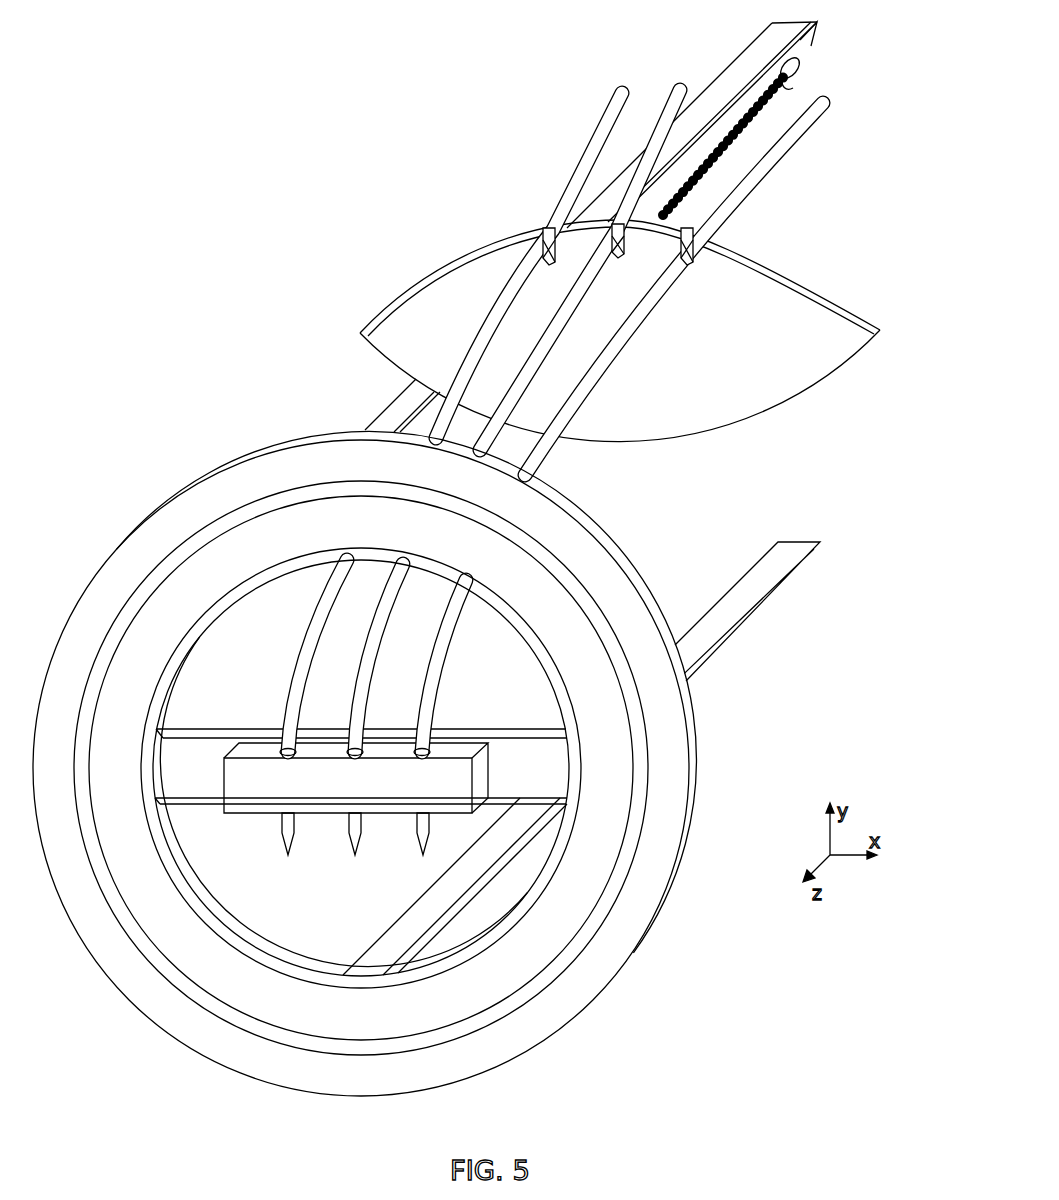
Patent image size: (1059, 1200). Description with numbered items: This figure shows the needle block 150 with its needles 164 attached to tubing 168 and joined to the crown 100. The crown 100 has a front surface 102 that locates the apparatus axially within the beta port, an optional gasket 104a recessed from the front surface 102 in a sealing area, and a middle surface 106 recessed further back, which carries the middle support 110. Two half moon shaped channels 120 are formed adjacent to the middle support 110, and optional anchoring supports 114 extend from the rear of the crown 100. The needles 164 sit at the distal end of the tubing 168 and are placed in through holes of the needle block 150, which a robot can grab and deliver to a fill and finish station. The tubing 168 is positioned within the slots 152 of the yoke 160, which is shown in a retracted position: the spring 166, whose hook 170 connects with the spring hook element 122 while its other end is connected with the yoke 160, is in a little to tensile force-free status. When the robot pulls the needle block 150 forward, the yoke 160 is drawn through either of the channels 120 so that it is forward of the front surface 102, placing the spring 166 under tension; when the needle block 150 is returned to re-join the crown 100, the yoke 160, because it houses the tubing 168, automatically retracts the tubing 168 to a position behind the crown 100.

The crown 100 is at (680, 530).
The front surface 102 is at (553, 1013).
The gasket 104a is at (488, 1020).
The middle surface 106 is at (563, 920).
The middle support 110 is at (565, 765).
The anchoring support 114 is at (744, 68).
The half moon shaped channel 120 is at (355, 666).
The spring hook element 122 is at (798, 52).
The needle block 150 is at (372, 794).
The slot 152 is at (697, 250).
The yoke 160 is at (830, 288).
The needle 164 is at (350, 842).
The spring 166 is at (737, 140).
The tubing 168 is at (545, 445).
The hook 170 is at (781, 90).